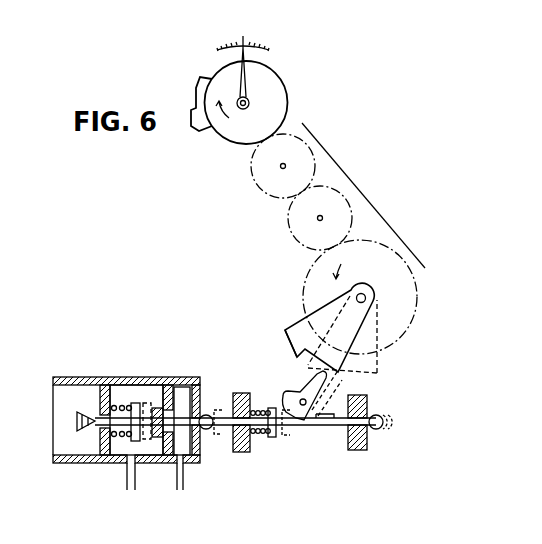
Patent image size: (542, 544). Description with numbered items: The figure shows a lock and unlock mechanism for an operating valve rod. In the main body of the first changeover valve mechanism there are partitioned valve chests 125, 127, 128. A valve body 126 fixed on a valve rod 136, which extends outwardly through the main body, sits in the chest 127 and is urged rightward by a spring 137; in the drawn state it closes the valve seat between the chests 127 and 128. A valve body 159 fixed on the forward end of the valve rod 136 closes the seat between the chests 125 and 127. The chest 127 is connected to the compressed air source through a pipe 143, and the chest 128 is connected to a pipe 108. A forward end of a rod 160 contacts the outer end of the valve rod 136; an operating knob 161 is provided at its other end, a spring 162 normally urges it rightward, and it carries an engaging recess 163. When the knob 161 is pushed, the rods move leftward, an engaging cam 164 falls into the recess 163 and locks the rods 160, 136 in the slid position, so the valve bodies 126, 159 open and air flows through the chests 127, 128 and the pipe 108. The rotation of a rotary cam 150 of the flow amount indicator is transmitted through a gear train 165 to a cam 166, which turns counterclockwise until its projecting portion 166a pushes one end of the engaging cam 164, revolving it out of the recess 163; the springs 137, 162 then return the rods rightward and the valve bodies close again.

The rotary cam 150 is at (288, 95).
The gear train 165 is at (358, 190).
The cam 166 is at (300, 320).
The projecting portion 166a is at (284, 344).
The engaging cam 164 is at (290, 395).
The valve chest 125 is at (68, 386).
The valve chest 127 is at (123, 392).
The valve chest 128 is at (180, 388).
The valve body 159 is at (77, 421).
The spring 137 is at (120, 438).
The valve body 126 is at (137, 442).
The valve rod 136 is at (188, 428).
The pipe 143 is at (128, 489).
The pipe 108 is at (178, 492).
The spring 162 is at (260, 436).
The engaging recess 163 is at (317, 430).
The rod 160 is at (338, 432).
The operating knob 161 is at (372, 412).